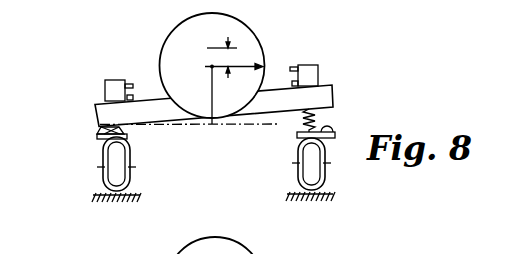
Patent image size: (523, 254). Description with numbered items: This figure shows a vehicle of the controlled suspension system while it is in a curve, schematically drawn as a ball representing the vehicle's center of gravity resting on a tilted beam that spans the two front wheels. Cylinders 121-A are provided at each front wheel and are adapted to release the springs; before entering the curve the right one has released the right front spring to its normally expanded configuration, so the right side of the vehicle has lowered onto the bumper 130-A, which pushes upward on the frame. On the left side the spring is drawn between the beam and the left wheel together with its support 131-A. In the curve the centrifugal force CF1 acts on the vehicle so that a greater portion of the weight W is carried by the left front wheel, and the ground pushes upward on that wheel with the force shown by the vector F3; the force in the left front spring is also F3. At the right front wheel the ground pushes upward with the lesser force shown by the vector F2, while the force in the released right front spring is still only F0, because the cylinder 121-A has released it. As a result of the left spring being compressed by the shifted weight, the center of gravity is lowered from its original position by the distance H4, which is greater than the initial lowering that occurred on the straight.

The cylinder 121-A is at (105, 88).
The bumper 130-A is at (98, 132).
The right spring support plate 131-A is at (333, 128).
The weight W is at (212, 124).
The distance H4 is at (232, 56).
The centrifugal force CF1 is at (248, 65).
The force F0 is at (128, 132).
The vector F2 is at (118, 206).
The vector F3 is at (299, 130).